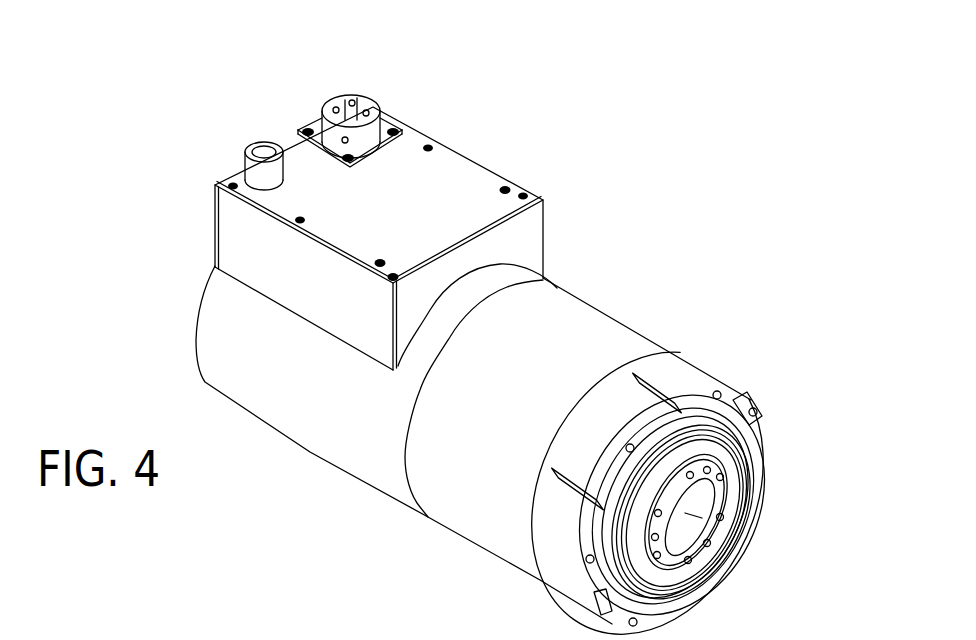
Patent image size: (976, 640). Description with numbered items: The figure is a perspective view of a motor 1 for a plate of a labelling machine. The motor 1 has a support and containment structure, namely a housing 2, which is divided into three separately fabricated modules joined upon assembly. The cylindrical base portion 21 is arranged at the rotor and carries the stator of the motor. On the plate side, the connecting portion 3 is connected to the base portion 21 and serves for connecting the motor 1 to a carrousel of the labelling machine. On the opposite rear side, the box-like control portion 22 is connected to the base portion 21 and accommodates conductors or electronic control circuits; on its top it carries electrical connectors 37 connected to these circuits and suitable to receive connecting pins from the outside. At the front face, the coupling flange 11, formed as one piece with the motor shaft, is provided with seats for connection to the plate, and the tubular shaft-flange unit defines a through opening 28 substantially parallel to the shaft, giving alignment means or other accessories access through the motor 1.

The motor 1 is at (590, 235).
The housing 2 is at (463, 503).
The connecting portion 3 is at (677, 378).
The coupling flange 11 is at (738, 500).
The base portion 21 is at (610, 342).
The control portion 22 is at (335, 443).
The through opening 28 is at (737, 560).
The electrical connector 37 is at (366, 100).